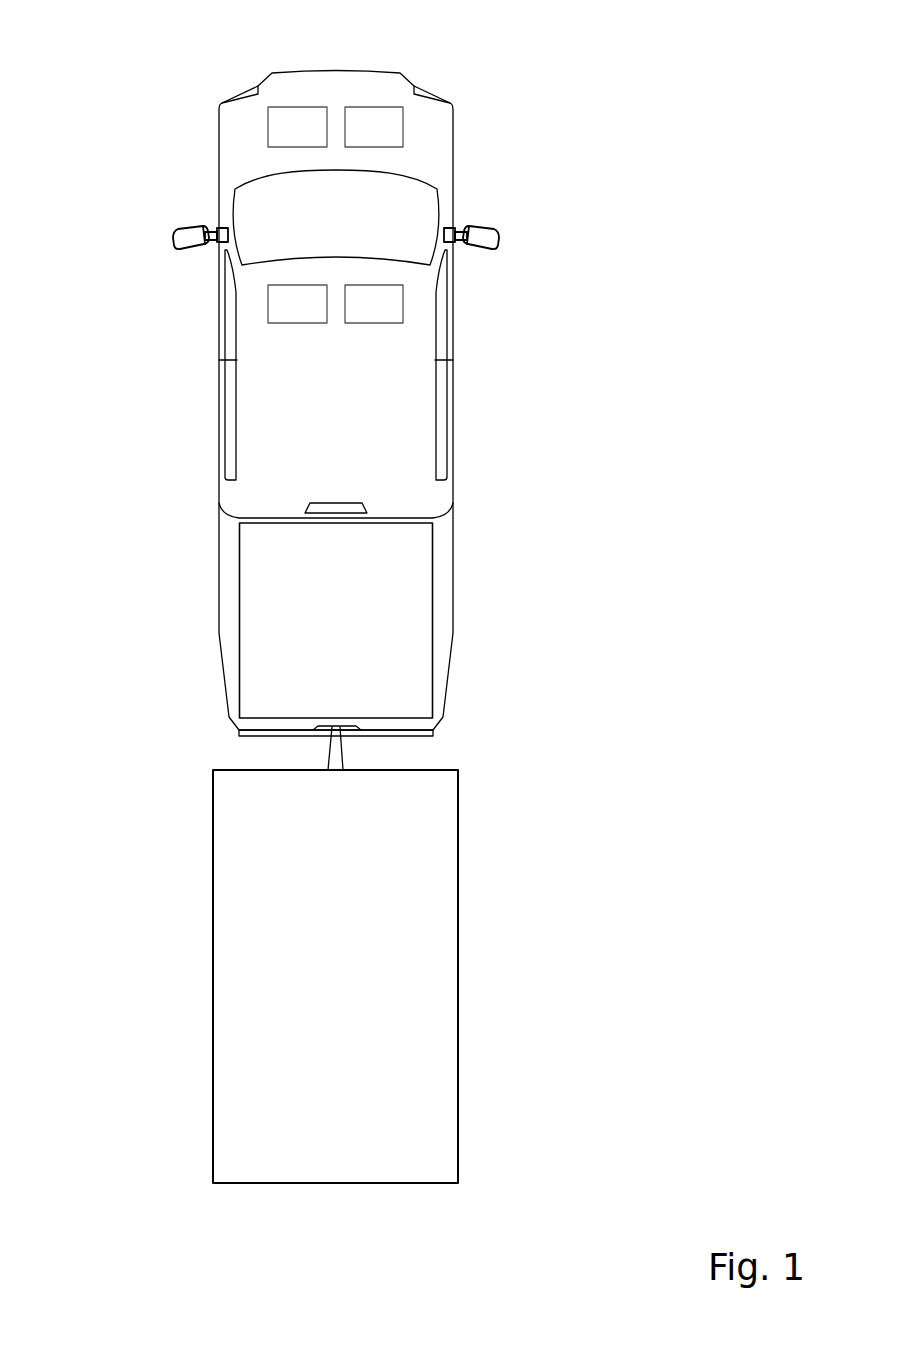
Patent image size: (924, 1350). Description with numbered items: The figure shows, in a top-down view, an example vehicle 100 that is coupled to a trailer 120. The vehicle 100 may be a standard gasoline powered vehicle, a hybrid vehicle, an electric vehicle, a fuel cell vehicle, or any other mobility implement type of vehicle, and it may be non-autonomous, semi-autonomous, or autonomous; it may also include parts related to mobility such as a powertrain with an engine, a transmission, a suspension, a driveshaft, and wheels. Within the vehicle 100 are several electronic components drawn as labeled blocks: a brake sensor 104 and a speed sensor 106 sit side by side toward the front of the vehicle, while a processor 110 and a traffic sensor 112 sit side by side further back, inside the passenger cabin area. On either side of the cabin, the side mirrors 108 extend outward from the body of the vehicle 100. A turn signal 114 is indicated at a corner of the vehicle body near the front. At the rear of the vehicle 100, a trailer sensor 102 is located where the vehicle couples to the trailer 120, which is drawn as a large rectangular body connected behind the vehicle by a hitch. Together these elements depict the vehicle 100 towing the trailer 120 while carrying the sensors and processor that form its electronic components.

The vehicle 100 is at (183, 43).
The trailer sensor 102 is at (315, 728).
The brake sensor 104 is at (297, 127).
The speed sensor 106 is at (374, 127).
The side mirrors 108 is at (172, 239).
The processor 110 is at (297, 304).
The traffic sensor 112 is at (374, 304).
The turn signal 114 is at (436, 95).
The trailer 120 is at (213, 975).